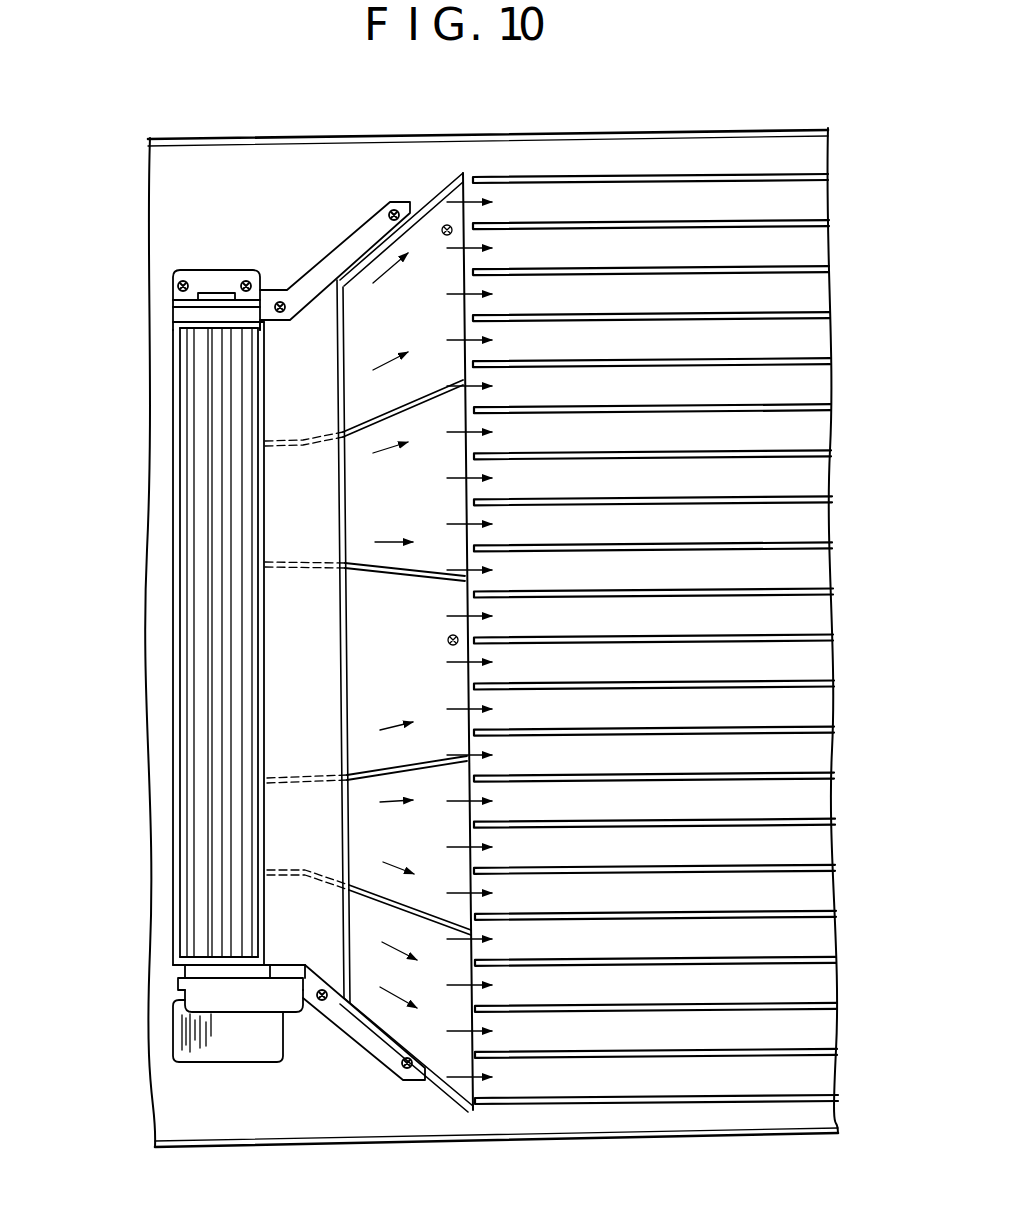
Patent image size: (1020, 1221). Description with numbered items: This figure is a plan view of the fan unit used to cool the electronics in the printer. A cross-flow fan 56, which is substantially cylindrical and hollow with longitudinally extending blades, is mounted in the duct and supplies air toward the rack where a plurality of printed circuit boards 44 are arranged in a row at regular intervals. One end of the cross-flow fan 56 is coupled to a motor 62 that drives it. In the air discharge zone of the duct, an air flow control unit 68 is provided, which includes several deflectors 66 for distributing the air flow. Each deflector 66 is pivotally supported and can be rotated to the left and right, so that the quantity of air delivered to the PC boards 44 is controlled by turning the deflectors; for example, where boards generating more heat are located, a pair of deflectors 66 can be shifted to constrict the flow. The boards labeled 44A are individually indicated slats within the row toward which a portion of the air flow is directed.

The printed circuit boards 44 is at (812, 272).
The louver slats adjacent deflector 44A is at (708, 633).
The cross-flow fan 56 is at (147, 566).
The motor 62 is at (243, 1047).
The deflectors 66 is at (423, 400).
The air flow control unit 68 is at (356, 295).